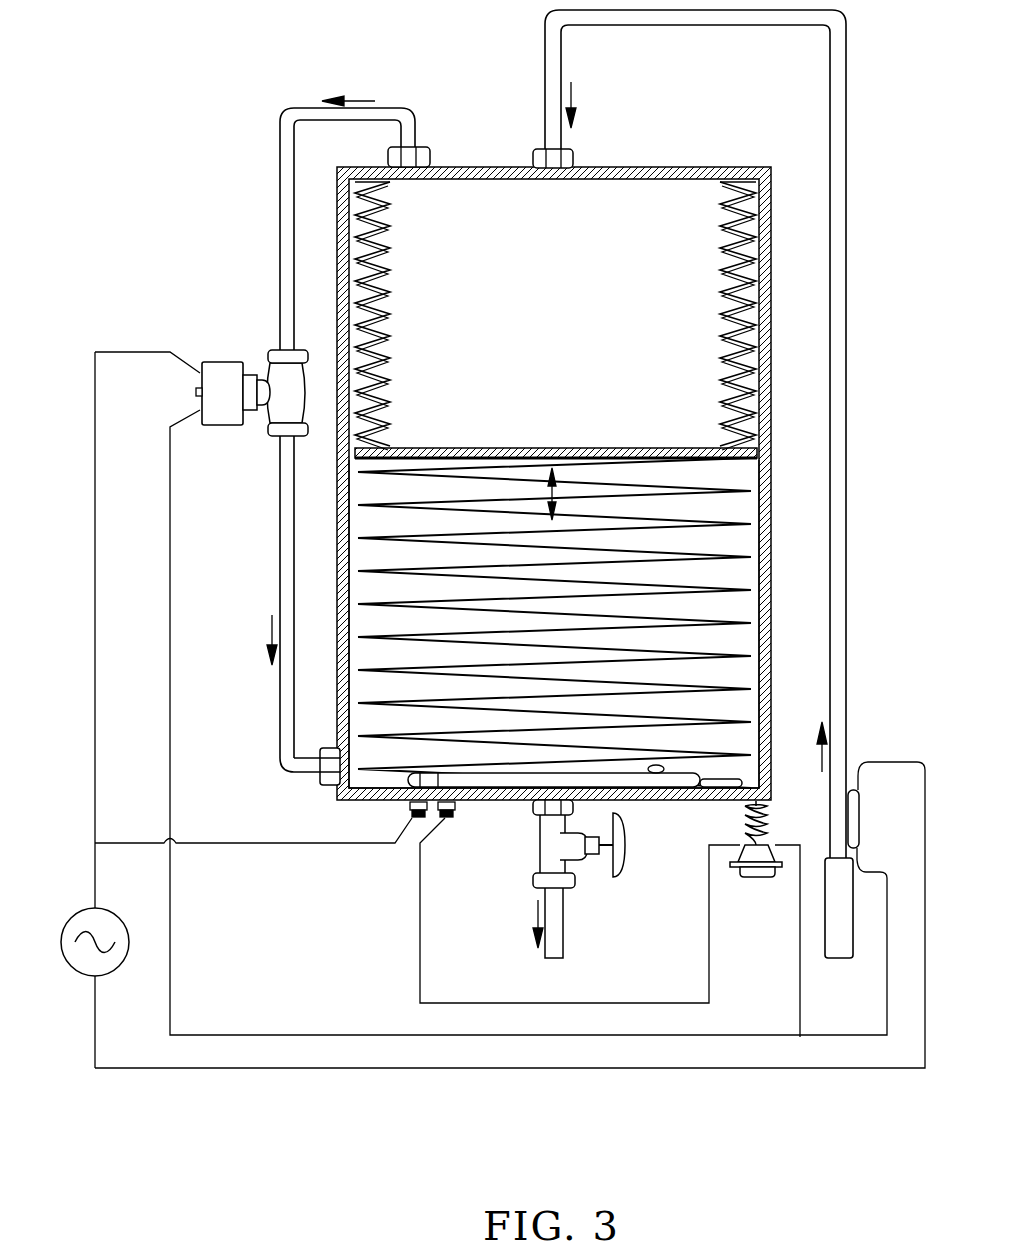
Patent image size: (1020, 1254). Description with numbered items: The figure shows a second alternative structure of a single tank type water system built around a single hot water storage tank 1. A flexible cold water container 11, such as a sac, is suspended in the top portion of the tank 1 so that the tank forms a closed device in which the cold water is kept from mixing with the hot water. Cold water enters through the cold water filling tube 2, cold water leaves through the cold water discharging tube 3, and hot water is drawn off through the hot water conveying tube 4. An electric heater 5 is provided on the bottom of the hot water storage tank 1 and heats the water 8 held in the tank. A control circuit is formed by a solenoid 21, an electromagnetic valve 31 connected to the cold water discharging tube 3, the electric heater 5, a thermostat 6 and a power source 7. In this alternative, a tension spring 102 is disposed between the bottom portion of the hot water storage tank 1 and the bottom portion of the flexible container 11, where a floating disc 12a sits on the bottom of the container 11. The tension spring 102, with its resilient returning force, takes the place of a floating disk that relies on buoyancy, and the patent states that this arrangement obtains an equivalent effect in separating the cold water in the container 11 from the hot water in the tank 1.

The hot water storage tank 1 is at (655, 168).
The cold water filling tube 2 is at (848, 200).
The cold water discharging tube 3 is at (280, 250).
The hot water conveying tube 4 is at (566, 906).
The electric heater 5 is at (658, 790).
The thermostat 6 is at (752, 878).
The power source 7 is at (82, 908).
The water 8 is at (738, 639).
The flexible cold water container 11 is at (745, 256).
The floating disc 12a is at (633, 447).
The solenoid 21 is at (858, 812).
The electromagnetic valve 31 is at (224, 426).
The tension spring 102 is at (720, 526).